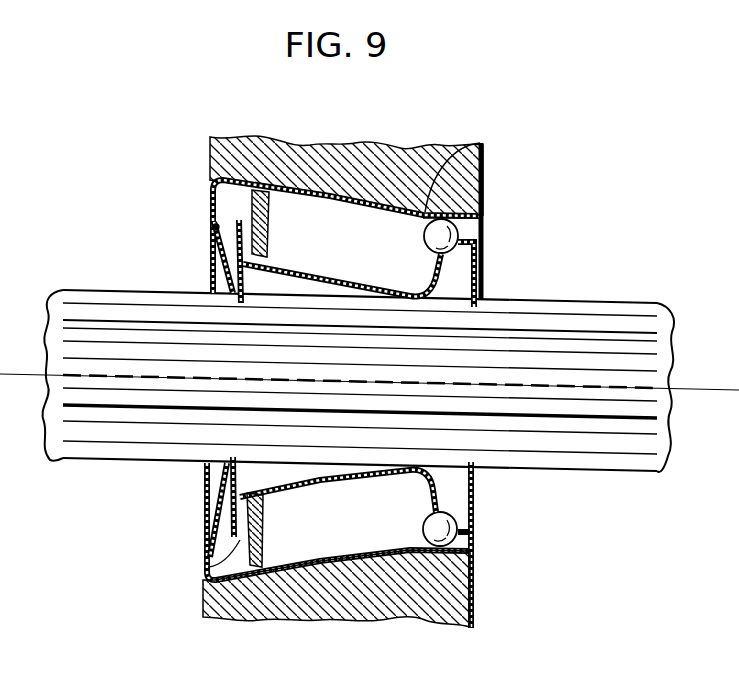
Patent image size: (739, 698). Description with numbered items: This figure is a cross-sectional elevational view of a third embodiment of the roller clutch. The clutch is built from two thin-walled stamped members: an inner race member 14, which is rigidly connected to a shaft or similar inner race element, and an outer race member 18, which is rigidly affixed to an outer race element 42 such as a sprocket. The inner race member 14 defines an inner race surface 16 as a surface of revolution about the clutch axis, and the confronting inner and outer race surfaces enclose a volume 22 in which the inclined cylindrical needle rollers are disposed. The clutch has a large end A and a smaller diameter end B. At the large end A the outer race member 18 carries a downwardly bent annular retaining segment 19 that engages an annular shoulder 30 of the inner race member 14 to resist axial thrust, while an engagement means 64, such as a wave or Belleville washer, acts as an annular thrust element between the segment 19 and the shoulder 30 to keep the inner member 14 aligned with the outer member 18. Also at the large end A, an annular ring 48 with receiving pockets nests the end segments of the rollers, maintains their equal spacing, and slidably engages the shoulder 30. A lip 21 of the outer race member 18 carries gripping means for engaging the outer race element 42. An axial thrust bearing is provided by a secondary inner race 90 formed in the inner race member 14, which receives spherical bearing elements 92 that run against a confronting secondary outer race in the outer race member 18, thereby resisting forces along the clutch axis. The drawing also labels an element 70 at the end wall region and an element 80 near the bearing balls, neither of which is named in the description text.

The inner race member 14 is at (240, 271).
The inner race surface 16 is at (244, 282).
The outer race member 18 is at (432, 587).
The annular retaining segment 19 is at (210, 222).
The lip 21 is at (477, 568).
The volume 22 is at (300, 217).
The annular shoulder 30 is at (207, 567).
The outer race element 42 is at (408, 168).
The annular ring 48 is at (208, 140).
The engagement means 64 is at (203, 482).
The end wall 70 is at (487, 298).
The ball 80 is at (432, 278).
The secondary inner race 90 is at (482, 147).
The spherical bearing elements 92 is at (480, 213).
The large end A is at (196, 213).
The smaller diameter end B is at (485, 273).